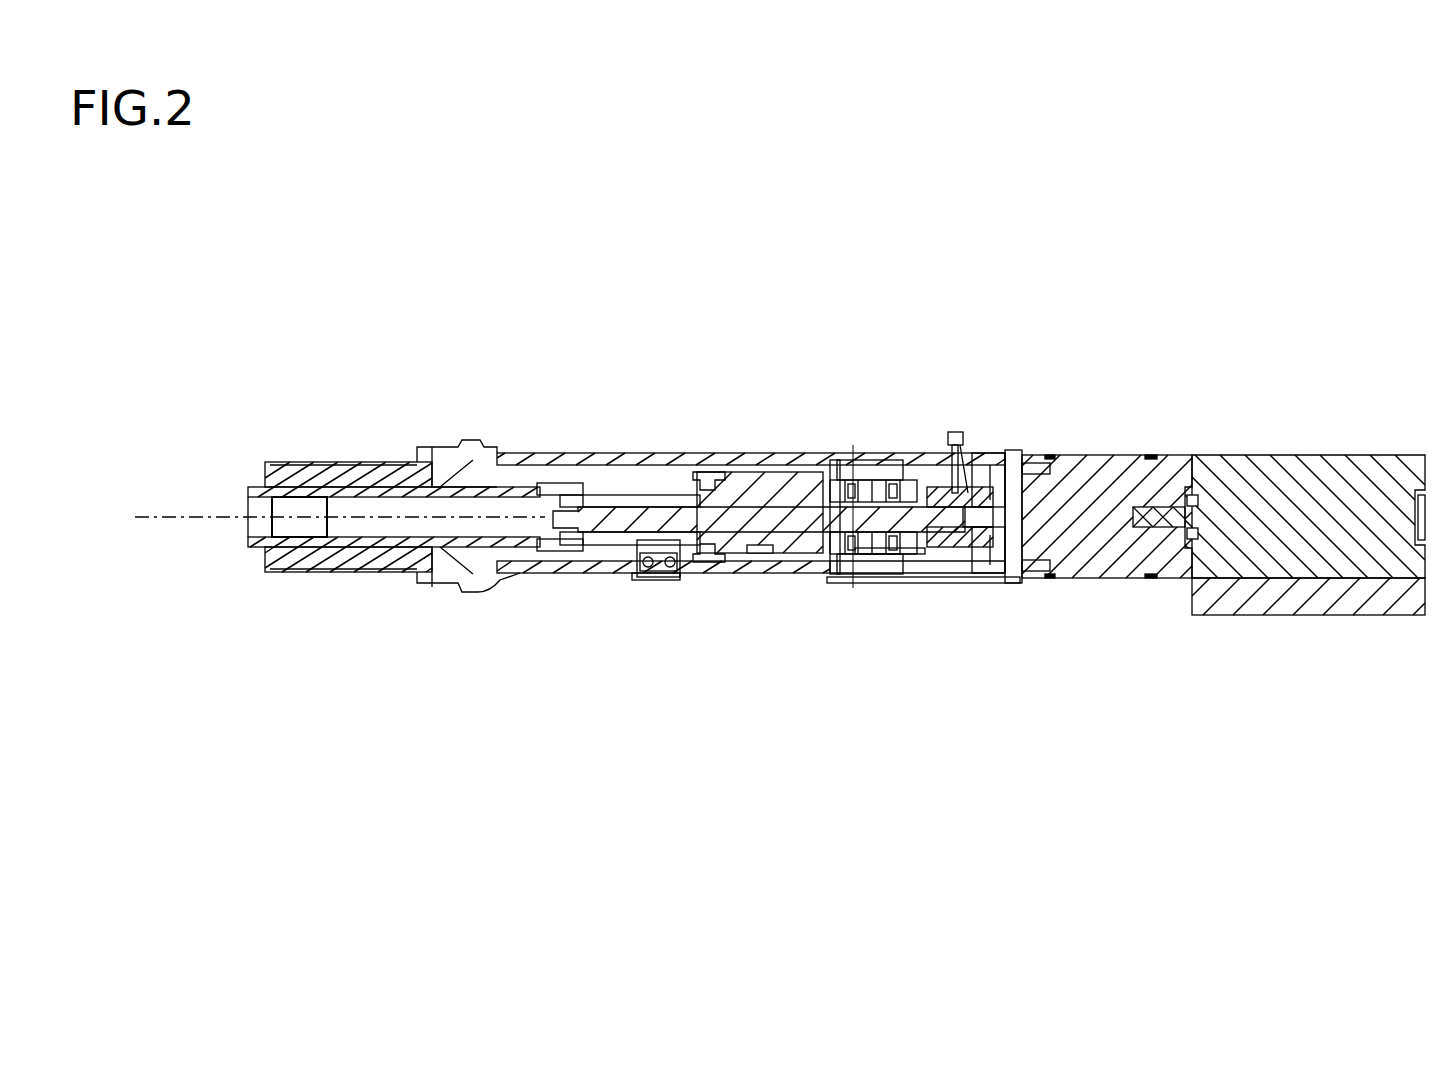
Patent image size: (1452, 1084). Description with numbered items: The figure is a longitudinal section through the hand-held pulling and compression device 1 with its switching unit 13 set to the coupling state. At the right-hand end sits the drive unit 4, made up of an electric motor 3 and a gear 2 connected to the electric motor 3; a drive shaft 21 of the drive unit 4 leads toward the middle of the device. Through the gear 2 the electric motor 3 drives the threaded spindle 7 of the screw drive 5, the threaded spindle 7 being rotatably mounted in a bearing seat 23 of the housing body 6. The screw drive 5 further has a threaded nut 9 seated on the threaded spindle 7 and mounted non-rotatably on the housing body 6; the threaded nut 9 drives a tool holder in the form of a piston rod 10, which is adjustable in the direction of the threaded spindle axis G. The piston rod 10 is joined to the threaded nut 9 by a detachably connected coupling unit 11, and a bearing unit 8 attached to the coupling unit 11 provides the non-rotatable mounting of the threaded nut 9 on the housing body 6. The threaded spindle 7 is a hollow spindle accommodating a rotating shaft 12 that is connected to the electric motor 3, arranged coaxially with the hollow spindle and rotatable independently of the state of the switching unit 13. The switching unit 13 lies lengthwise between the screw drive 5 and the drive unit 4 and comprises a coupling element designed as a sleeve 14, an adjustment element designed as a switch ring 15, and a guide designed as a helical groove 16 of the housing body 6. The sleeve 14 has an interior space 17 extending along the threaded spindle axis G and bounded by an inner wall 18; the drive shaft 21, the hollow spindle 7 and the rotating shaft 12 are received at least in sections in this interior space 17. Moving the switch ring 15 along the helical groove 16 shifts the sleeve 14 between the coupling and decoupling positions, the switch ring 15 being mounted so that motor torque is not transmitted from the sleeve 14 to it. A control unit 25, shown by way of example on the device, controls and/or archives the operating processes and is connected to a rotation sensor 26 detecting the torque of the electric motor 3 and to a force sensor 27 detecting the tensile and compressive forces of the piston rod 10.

The pulling and compression device 1 is at (242, 813).
The gear 2 is at (1095, 563).
The electric motor 3 is at (1313, 462).
The drive unit 4 is at (1205, 650).
The screw drive 5 is at (780, 625).
The housing body 6 is at (855, 455).
The threaded spindle 7 is at (650, 490).
The bearing unit 8 is at (665, 580).
The threaded nut 9 is at (795, 470).
The piston rod 10 is at (250, 487).
The coupling unit 11 is at (706, 475).
The rotating shaft 12 is at (600, 540).
The switching unit 13 is at (921, 373).
The sleeve 14 is at (938, 560).
The switch ring 15 is at (955, 432).
The helical groove 16 is at (975, 468).
The interior space 17 is at (950, 492).
The inner wall 18 is at (962, 525).
The drive shaft 21 is at (1013, 453).
The bearing seat 23 is at (876, 588).
The control unit 25 is at (1365, 605).
The rotation sensor 26 is at (863, 553).
The force sensor 27 is at (445, 470).
The threaded spindle axis G is at (150, 505).